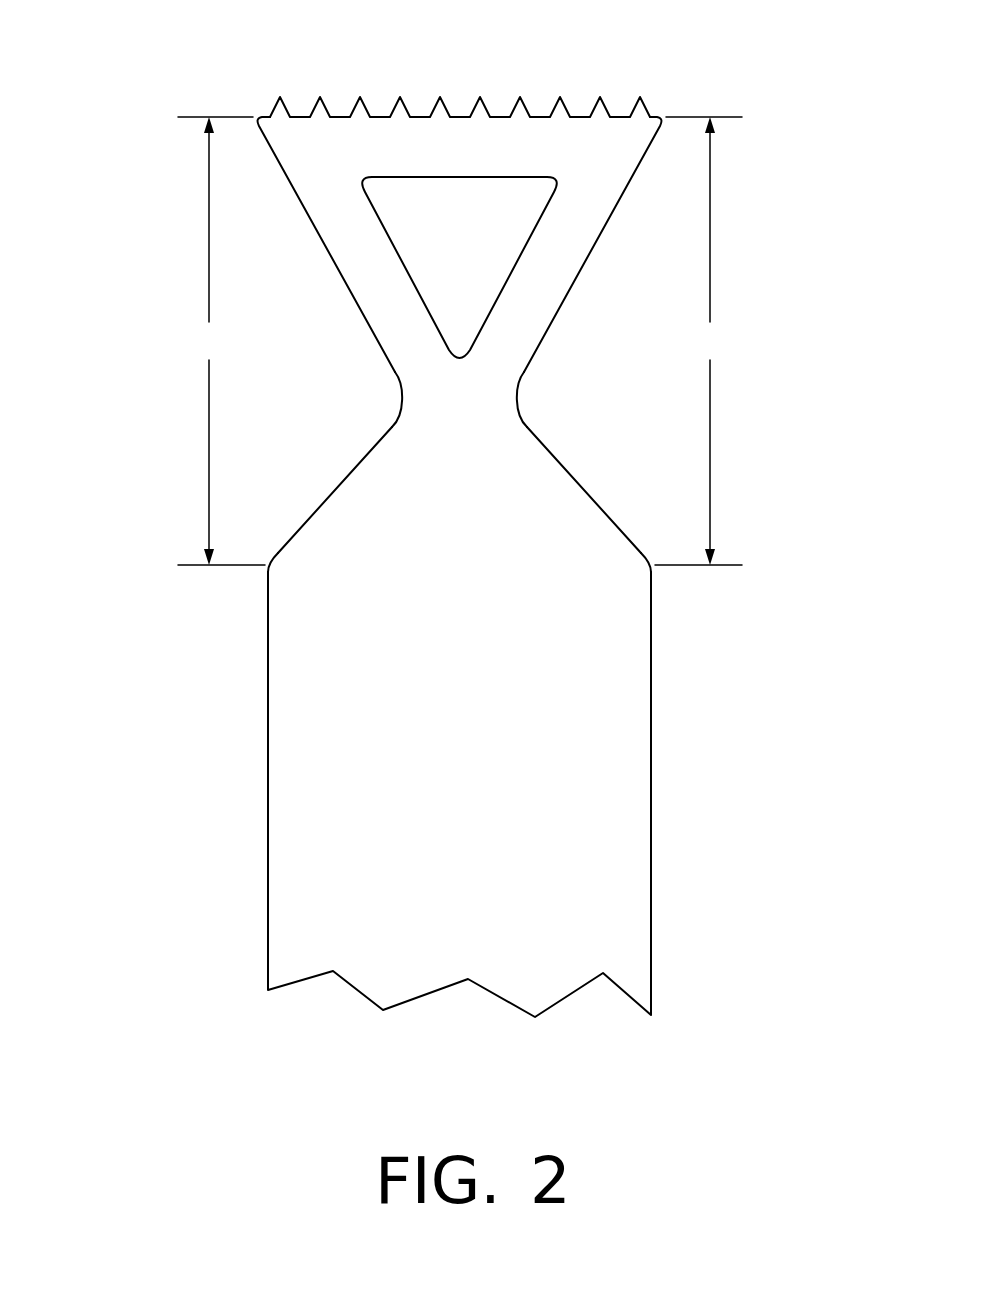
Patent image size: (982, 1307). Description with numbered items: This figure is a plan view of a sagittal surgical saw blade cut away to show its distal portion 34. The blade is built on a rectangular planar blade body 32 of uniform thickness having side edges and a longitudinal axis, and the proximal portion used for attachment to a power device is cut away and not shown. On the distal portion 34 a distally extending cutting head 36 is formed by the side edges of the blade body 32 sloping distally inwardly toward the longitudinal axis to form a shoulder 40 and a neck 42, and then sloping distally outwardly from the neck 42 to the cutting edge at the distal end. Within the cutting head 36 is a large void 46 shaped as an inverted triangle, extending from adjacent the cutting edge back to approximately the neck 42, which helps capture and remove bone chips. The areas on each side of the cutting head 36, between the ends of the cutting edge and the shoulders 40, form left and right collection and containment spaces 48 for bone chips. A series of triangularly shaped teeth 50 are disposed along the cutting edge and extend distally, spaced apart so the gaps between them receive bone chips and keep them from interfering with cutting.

The blade body 32 is at (470, 640).
The distal portion 34 is at (222, 701).
The cutting head 36 is at (313, 229).
The shoulder 40 is at (267, 574).
The neck 42 is at (402, 400).
The void 46 is at (471, 239).
The collection and containment space 48 is at (460, 341).
The teeth 50 is at (440, 98).